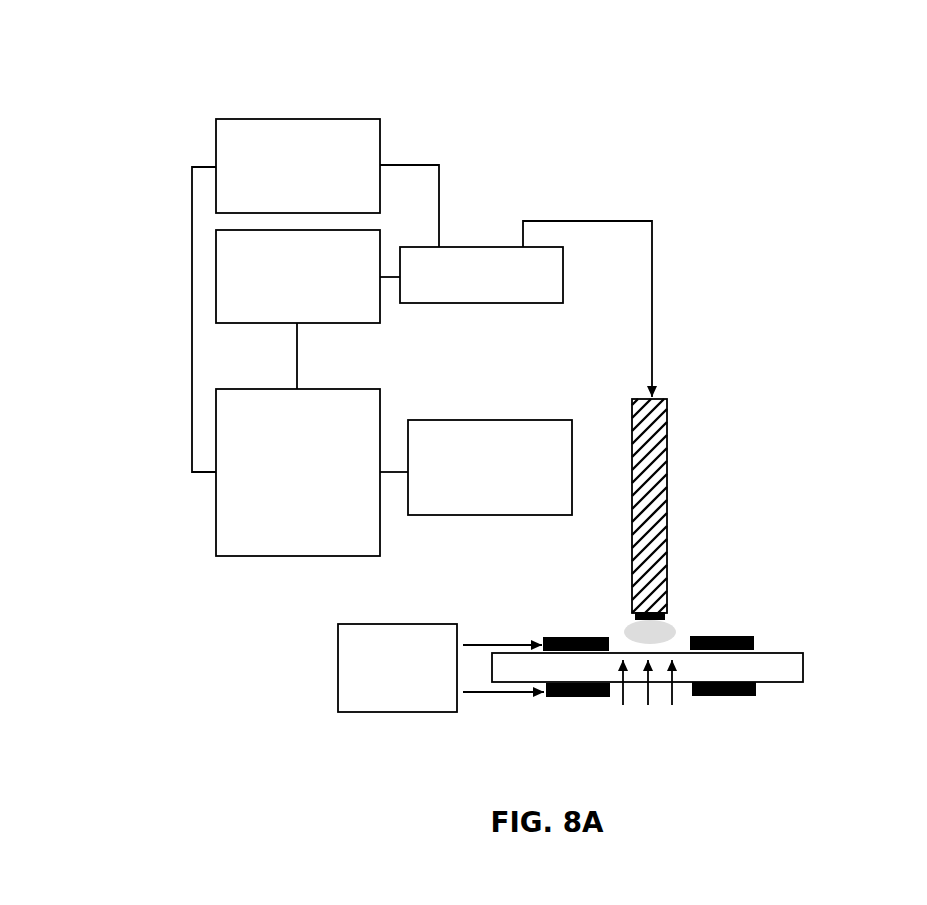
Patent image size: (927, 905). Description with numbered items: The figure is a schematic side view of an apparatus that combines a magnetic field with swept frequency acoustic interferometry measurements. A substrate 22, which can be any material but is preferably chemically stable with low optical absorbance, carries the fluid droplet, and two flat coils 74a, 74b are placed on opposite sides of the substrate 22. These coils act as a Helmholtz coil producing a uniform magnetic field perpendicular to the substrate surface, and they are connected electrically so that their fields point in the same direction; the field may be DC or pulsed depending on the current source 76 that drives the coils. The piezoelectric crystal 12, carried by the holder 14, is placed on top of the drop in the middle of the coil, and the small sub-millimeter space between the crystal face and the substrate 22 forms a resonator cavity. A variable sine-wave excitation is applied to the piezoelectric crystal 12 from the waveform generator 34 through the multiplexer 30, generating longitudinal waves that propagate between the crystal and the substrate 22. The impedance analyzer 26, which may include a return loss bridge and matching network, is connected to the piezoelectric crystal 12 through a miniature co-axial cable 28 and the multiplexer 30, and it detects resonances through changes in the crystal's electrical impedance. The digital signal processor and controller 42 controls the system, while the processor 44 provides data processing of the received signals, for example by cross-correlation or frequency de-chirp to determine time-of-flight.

The impedance analyzer 26 is at (381, 117).
The miniature co-axial cable 28 is at (579, 218).
The multiplexer 30 is at (482, 306).
The waveform generator 34 is at (382, 326).
The digital signal processor and controller 42 is at (343, 560).
The processor 44 is at (575, 487).
The current source 76 is at (393, 621).
The holder 14 is at (668, 504).
The piezoelectric crystal 12 is at (652, 605).
The substrate 22 is at (845, 702).
The flat coil 74a is at (573, 635).
The flat coil 74b is at (577, 700).